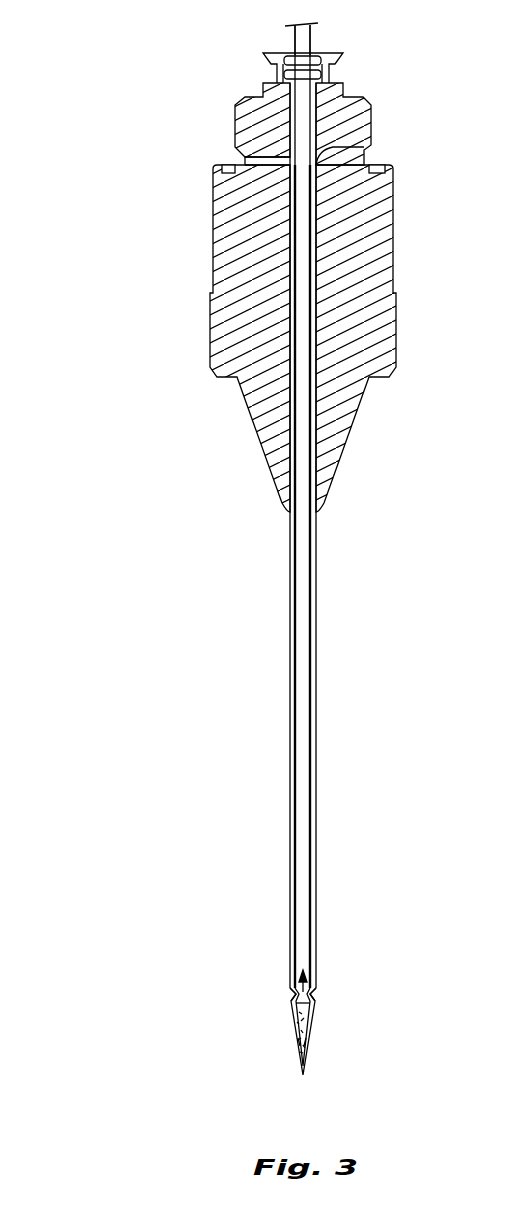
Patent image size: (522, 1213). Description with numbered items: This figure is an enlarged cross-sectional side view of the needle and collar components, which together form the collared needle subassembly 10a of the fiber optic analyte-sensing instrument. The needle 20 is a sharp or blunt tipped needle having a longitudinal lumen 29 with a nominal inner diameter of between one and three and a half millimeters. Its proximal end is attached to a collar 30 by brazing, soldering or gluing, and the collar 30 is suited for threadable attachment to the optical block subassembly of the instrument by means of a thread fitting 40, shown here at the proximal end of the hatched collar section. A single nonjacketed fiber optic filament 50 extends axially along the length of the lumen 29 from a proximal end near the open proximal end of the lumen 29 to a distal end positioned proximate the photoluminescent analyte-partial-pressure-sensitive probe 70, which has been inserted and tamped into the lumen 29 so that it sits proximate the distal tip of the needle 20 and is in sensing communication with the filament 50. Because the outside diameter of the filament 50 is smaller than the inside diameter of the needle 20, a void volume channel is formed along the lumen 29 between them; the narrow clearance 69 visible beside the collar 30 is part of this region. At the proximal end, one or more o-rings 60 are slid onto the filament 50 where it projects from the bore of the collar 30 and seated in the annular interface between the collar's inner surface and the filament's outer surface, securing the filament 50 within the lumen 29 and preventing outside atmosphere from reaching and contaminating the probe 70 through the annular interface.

The collared needle subassembly 10a is at (116, 202).
The needle 20 is at (290, 600).
The lumen 29 is at (315, 1000).
The collar 30 is at (372, 333).
The thread fitting 40 is at (372, 109).
The fiber optic filament 50 is at (305, 580).
The o-rings 60 is at (288, 75).
The gap 69 is at (226, 162).
The photoluminescent analyte-partial-pressure-sensitive probe 70 is at (310, 1022).